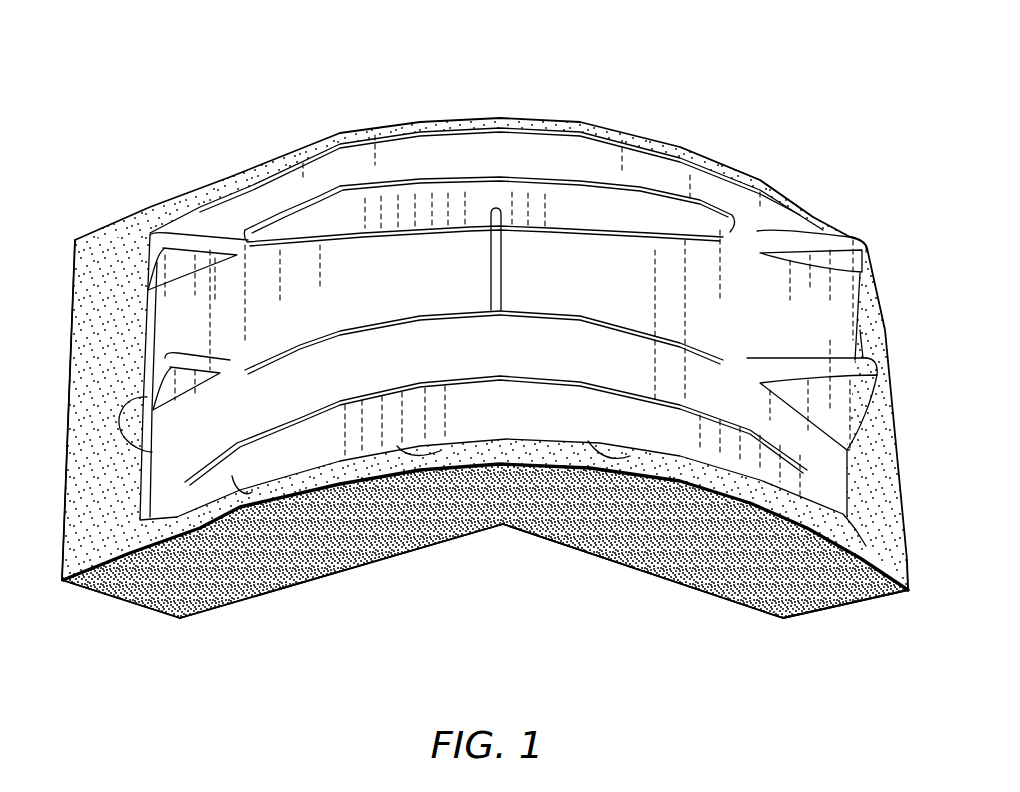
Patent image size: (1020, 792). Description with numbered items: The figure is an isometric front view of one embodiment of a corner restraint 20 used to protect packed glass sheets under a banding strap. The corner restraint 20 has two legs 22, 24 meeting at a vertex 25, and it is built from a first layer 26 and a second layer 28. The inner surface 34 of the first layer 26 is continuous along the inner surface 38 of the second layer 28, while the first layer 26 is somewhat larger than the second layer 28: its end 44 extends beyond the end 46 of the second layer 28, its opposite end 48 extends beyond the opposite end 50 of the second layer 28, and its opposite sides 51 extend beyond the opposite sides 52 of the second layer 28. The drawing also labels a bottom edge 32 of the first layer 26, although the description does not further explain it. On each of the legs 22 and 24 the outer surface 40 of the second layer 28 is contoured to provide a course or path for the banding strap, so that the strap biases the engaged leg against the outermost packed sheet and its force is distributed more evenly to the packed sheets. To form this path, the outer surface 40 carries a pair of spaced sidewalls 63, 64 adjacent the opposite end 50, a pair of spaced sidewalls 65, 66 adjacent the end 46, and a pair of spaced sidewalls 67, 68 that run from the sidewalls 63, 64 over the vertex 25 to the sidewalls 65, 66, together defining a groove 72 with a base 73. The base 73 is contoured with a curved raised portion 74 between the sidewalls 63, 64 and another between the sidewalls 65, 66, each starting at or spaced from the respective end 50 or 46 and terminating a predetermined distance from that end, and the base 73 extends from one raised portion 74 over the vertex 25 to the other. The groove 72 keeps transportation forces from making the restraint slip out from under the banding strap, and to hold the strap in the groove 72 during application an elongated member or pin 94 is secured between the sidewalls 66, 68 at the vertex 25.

The corner restraint 20 is at (622, 100).
The leg 22 is at (842, 678).
The leg 24 is at (134, 634).
The vertex 25 is at (502, 528).
The first layer 26 is at (230, 626).
The second layer 28 is at (331, 148).
The bottom edge 32 is at (340, 573).
The inner surface 34 is at (107, 528).
The inner surface 38 is at (247, 494).
The outer surface 40 is at (682, 135).
The end 44 is at (900, 598).
The end 46 is at (827, 603).
The opposite end 48 is at (68, 290).
The opposite end 50 is at (148, 438).
The opposite sides 51 is at (558, 123).
The opposite sides 52 is at (486, 122).
The sidewall 63 is at (187, 354).
The sidewall 64 is at (212, 240).
The sidewall 65 is at (864, 358).
The sidewall 66 is at (820, 236).
The sidewall 67 is at (692, 301).
The sidewall 68 is at (576, 165).
The groove 72 is at (426, 258).
The base 73 is at (330, 304).
The curved raised portion 74 is at (160, 327).
The pin 94 is at (503, 278).